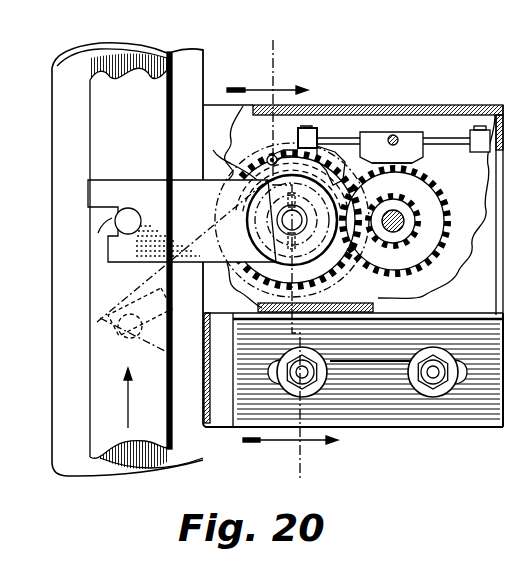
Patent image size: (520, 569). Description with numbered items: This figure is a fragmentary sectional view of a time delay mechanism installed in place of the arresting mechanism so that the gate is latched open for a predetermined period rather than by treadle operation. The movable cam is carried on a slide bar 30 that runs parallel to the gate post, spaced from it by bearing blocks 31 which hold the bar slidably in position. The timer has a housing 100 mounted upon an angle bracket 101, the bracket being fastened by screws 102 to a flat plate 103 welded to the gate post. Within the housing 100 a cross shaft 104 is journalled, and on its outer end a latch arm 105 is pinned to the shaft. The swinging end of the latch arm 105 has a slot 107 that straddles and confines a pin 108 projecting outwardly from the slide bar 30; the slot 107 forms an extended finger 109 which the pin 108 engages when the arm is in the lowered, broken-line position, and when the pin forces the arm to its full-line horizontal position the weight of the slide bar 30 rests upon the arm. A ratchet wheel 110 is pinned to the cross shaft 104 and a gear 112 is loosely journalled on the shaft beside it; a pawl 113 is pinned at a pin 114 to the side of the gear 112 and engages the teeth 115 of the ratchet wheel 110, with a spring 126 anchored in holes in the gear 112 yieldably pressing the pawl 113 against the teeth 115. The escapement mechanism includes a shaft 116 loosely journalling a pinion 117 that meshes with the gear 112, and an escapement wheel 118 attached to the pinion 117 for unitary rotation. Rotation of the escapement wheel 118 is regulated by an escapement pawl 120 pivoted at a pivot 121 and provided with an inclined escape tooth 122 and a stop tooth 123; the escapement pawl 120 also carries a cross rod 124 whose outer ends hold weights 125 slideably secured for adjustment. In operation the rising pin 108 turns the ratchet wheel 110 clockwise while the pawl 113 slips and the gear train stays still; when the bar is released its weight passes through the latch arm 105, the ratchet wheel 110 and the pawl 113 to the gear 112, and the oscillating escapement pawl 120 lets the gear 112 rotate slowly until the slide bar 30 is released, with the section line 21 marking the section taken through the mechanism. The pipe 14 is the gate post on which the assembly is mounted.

The pipe 14 is at (62, 98).
The slide bar 30 is at (105, 117).
The bearing blocks 31 is at (156, 70).
The housing 100 is at (366, 107).
The angle bracket 101 is at (472, 410).
The screws 102 is at (300, 382).
The flat plate 103 is at (223, 413).
The cross shaft 104 is at (285, 220).
The latch arm 105 is at (145, 190).
The slot 107 is at (98, 207).
The pin 108 is at (100, 243).
The extended finger 109 is at (88, 193).
The ratchet wheel 110 is at (343, 160).
The gear 112 is at (343, 270).
The pawl 113 is at (274, 155).
The pawl pin 114 is at (244, 147).
The teeth 115 is at (312, 128).
The shaft 116 is at (399, 236).
The pinion 117 is at (416, 220).
The escapement wheel 118 is at (443, 190).
The escapement pawl 120 is at (407, 136).
The pivot 121 is at (393, 135).
The escape tooth 122 is at (424, 160).
The stop tooth 123 is at (374, 180).
The cross rod 124 is at (452, 137).
The weights 125 is at (484, 132).
The spring 126 is at (330, 152).
The section line 21 is at (282, 260).